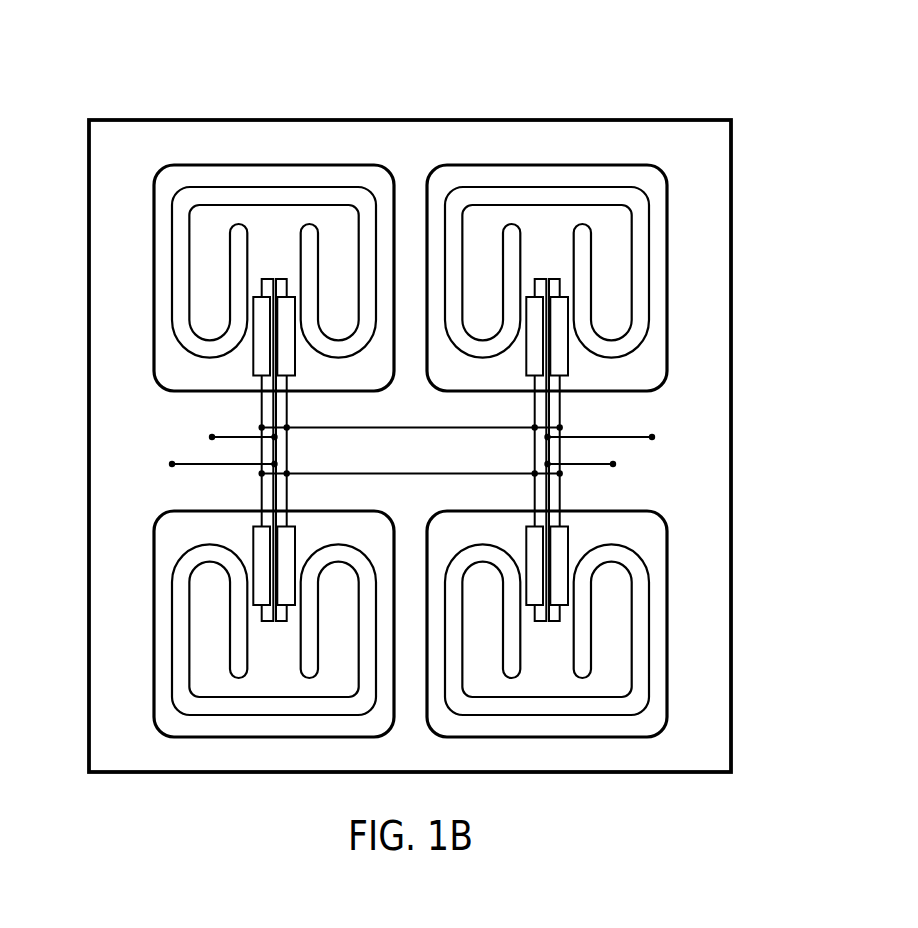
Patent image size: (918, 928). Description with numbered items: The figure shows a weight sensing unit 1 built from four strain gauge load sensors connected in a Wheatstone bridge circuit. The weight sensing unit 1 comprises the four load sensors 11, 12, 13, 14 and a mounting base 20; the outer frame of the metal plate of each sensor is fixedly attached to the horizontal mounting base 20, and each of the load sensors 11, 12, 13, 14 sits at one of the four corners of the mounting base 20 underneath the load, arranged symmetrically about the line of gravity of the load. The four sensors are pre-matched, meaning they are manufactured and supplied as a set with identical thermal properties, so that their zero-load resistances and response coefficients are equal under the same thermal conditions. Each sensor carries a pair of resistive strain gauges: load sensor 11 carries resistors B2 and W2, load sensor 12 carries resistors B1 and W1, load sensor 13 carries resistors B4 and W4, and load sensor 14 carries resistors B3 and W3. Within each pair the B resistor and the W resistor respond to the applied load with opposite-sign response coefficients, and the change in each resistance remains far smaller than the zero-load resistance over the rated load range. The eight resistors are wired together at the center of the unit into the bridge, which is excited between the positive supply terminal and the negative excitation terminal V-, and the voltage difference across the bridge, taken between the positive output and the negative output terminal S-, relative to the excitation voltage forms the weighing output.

The weight sensing unit 1 is at (684, 58).
The load sensor 11 is at (647, 367).
The load sensor 12 is at (657, 623).
The load sensor 13 is at (163, 629).
The load sensor 14 is at (163, 215).
The mounting base 20 is at (703, 206).
The resistor W1 is at (556, 565).
The resistor W2 is at (558, 339).
The resistor W3 is at (263, 339).
The resistor W4 is at (262, 563).
The resistor B1 is at (535, 565).
The resistor B2 is at (535, 339).
The resistor B3 is at (286, 339).
The resistor B4 is at (287, 565).
The negative sensing output terminal S- is at (209, 427).
The negative excitation voltage terminal V- is at (169, 455).